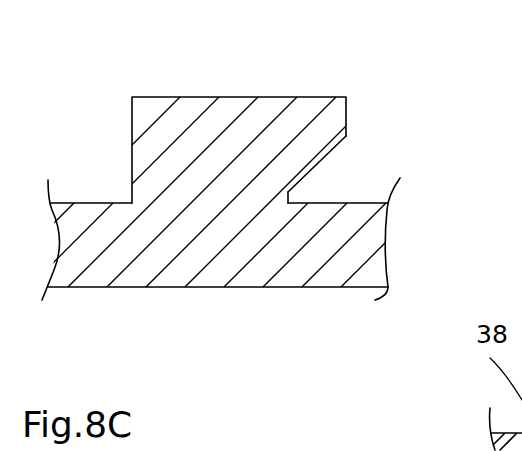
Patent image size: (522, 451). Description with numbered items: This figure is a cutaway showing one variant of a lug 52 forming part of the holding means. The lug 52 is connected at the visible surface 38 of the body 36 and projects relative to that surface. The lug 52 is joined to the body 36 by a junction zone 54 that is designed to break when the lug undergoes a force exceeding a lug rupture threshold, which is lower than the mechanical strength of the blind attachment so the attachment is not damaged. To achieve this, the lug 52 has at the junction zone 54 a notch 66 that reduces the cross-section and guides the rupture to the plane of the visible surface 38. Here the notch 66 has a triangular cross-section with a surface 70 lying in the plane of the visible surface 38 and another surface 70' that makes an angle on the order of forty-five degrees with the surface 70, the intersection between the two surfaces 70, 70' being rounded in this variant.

The body 36 is at (261, 198).
The visible surface 38 is at (92, 203).
The lug 52 is at (193, 107).
The junction zone 54 is at (408, 155).
The notch 66 is at (303, 188).
The surface 70 is at (340, 278).
The surface 70' is at (331, 110).